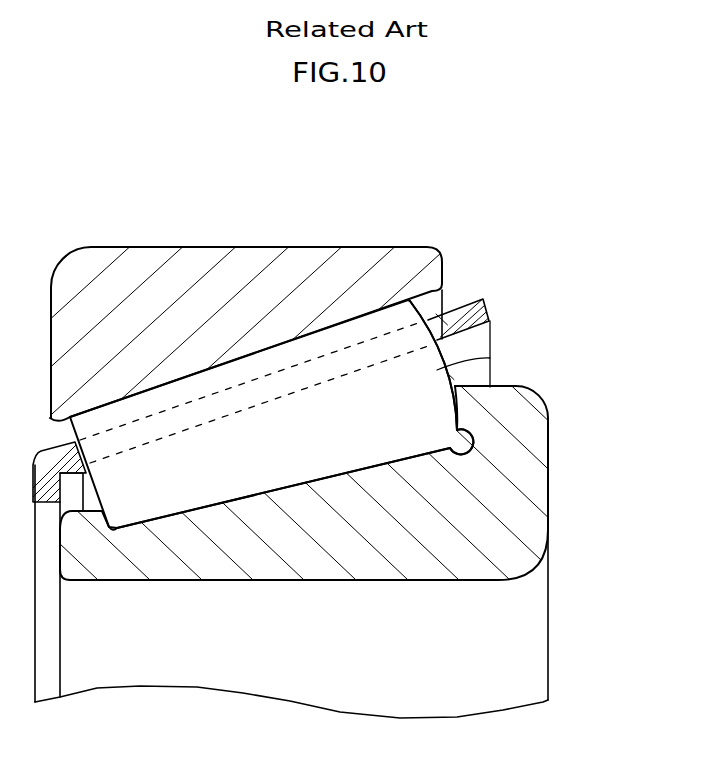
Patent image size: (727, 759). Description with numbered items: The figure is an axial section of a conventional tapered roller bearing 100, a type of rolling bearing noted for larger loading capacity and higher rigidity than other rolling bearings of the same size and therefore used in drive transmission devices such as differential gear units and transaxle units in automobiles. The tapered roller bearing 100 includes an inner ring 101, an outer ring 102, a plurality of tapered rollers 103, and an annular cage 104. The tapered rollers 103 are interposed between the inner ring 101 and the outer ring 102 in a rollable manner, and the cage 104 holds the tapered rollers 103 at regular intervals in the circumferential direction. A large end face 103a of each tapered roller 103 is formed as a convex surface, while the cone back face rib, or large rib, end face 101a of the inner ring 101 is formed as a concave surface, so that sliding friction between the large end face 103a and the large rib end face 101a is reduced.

The tapered roller bearing 100 is at (502, 230).
The inner ring 101 is at (548, 487).
The large rib end face 101a is at (458, 414).
The outer ring 102 is at (200, 246).
The tapered roller 103 is at (320, 457).
The large end face 103a is at (480, 357).
The annular cage 104 is at (488, 307).